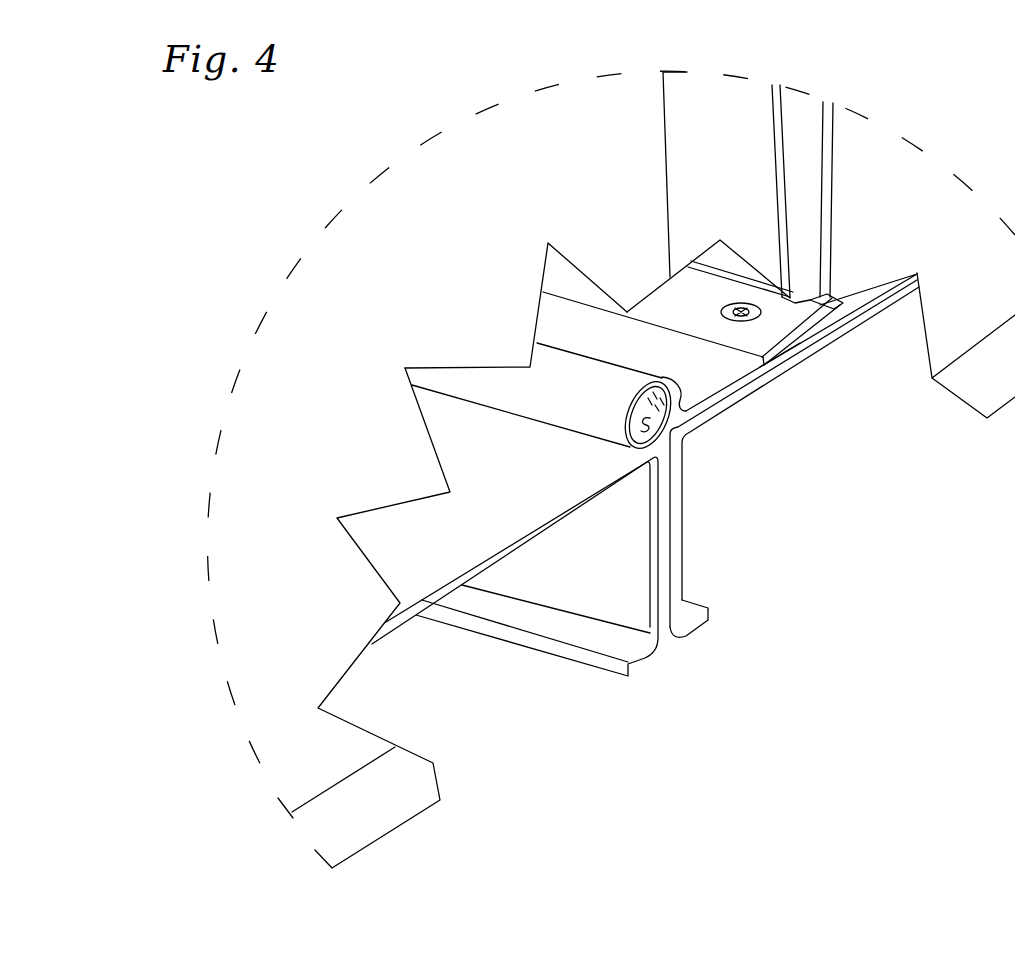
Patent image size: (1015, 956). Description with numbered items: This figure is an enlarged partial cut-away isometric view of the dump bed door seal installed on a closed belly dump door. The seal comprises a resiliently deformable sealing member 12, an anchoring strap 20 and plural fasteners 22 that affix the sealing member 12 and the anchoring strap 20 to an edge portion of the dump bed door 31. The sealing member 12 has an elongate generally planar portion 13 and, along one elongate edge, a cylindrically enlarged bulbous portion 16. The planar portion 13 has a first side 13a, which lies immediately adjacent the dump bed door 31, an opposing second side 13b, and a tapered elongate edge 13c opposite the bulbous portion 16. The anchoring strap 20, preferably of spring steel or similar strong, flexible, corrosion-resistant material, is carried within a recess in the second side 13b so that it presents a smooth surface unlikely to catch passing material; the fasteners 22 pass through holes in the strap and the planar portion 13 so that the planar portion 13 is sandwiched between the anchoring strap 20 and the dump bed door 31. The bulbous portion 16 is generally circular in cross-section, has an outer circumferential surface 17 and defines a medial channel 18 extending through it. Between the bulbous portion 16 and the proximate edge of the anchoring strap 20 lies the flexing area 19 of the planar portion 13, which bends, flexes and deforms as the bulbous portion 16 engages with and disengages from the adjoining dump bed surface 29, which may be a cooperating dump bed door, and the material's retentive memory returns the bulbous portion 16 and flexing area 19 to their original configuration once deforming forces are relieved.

The sealing member 12 is at (485, 408).
The planar portion 13 is at (722, 395).
The first side 13a is at (725, 372).
The second side 13b is at (785, 358).
The tapered elongate edge 13c is at (833, 293).
The bulbous portion 16 is at (453, 385).
The outer circumferential surface 17 is at (593, 390).
The medial channel 18 is at (640, 413).
The flexing area 19 is at (683, 410).
The anchoring strap 20 is at (677, 297).
The fasteners 22 is at (733, 303).
The dump bed surface 29 is at (650, 460).
The dump bed door 31 is at (677, 532).